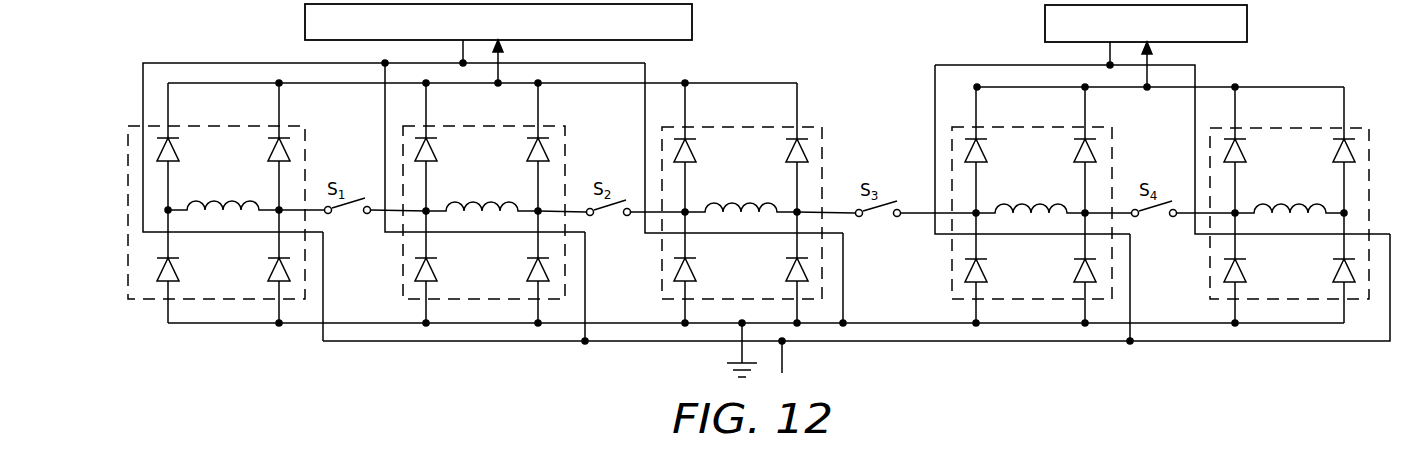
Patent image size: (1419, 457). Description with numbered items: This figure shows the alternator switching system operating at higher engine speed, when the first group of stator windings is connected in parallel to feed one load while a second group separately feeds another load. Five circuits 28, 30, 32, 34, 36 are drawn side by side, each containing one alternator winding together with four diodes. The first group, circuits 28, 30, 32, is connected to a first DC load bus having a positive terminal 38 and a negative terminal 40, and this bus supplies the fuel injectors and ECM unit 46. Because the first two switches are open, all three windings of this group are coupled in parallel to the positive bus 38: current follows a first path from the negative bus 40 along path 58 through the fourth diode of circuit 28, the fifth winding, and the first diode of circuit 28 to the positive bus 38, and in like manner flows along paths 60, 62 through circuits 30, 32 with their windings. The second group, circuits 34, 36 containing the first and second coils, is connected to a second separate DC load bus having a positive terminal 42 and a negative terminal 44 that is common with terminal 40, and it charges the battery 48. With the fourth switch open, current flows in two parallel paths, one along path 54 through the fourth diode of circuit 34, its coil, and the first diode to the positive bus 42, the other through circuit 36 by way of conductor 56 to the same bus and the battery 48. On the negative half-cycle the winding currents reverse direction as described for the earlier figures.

The circuit 28 is at (231, 126).
The circuit 30 is at (489, 126).
The circuit 32 is at (748, 127).
The circuit 34 is at (1041, 127).
The circuit 36 is at (1303, 128).
The positive terminal 38 is at (728, 83).
The negative terminal 40 is at (240, 323).
The positive terminal 42 is at (1283, 87).
The negative terminal 44 is at (1190, 324).
The fuel injectors and ECM unit 46 is at (305, 14).
The battery 48 is at (1045, 18).
The path 54 is at (1131, 277).
The return conductor 56 is at (1384, 342).
The path 58 is at (324, 279).
The path 60 is at (586, 270).
The path 62 is at (844, 270).